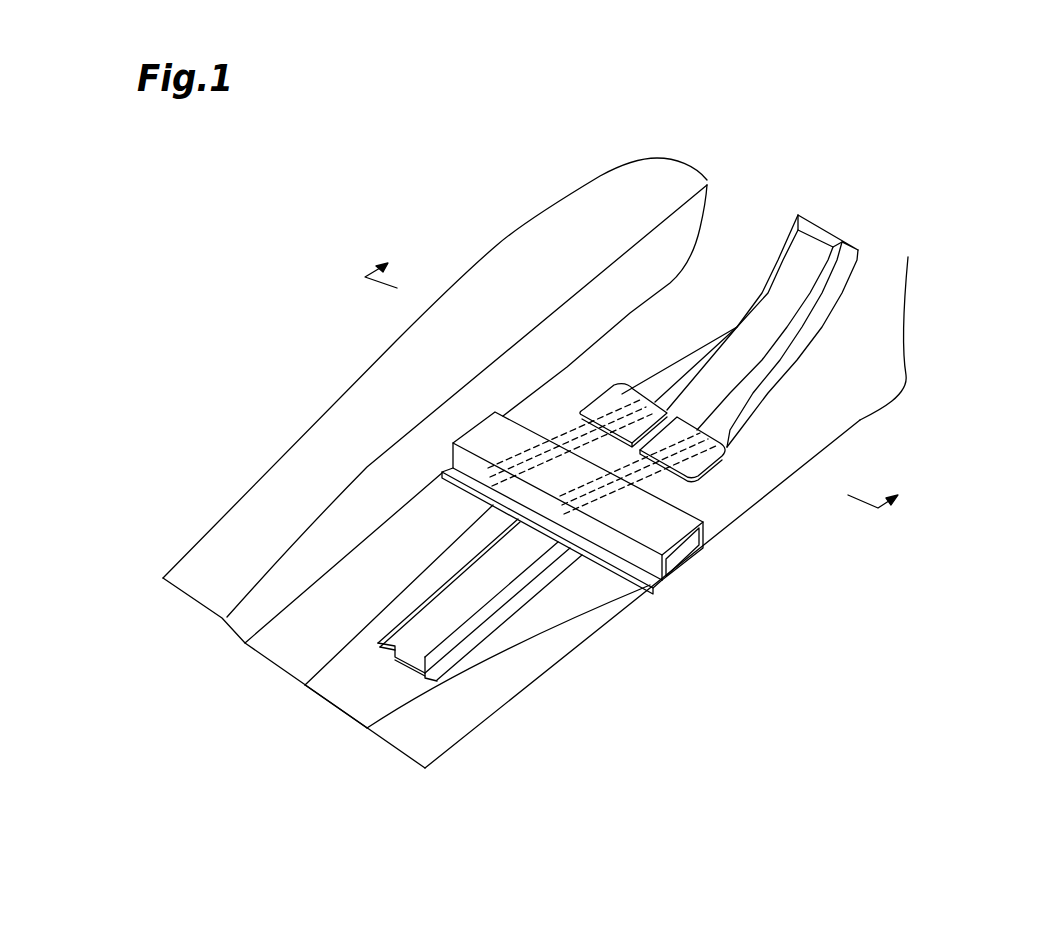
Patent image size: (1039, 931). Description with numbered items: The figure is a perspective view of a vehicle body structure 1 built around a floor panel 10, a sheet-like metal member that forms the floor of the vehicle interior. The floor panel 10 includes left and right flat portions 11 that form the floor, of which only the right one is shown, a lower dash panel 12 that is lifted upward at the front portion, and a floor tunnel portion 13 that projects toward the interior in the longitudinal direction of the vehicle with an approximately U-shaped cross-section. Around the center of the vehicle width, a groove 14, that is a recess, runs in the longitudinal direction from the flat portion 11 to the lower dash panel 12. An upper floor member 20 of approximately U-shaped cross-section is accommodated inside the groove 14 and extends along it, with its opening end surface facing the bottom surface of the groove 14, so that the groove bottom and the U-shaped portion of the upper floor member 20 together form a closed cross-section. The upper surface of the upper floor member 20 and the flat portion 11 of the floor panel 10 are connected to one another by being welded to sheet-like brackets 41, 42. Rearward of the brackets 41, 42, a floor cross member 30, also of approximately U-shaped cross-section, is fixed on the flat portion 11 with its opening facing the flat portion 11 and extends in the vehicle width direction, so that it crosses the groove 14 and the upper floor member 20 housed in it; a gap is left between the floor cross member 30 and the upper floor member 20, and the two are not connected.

The vehicle body structure 1 is at (959, 232).
The floor panel 10 is at (873, 417).
The flat portion 11 is at (543, 640).
The lower dash panel 12 is at (745, 228).
The floor tunnel portion 13 is at (585, 212).
The groove 14 is at (365, 692).
The upper floor member 20 is at (447, 643).
The floor cross member 30 is at (683, 548).
The bracket 41 is at (727, 458).
The bracket 42 is at (600, 405).